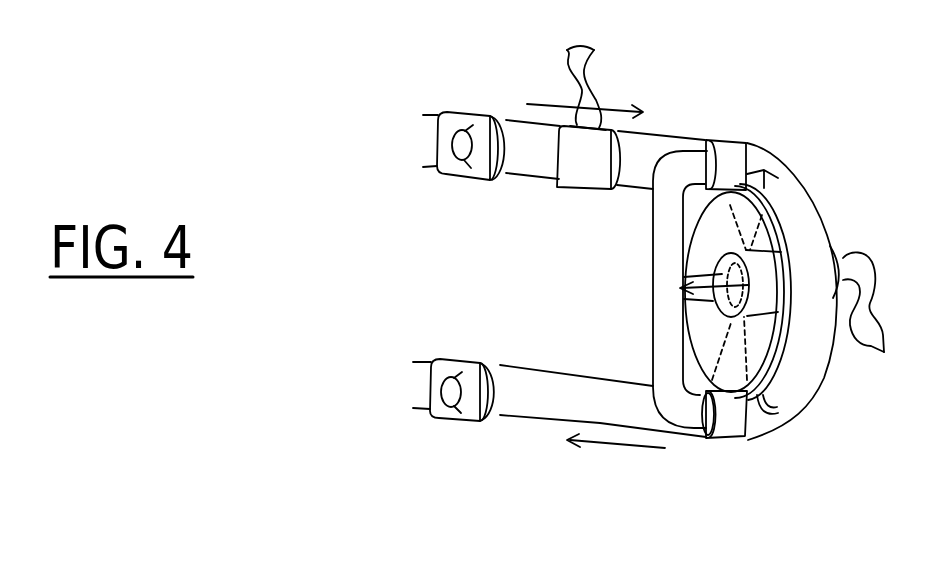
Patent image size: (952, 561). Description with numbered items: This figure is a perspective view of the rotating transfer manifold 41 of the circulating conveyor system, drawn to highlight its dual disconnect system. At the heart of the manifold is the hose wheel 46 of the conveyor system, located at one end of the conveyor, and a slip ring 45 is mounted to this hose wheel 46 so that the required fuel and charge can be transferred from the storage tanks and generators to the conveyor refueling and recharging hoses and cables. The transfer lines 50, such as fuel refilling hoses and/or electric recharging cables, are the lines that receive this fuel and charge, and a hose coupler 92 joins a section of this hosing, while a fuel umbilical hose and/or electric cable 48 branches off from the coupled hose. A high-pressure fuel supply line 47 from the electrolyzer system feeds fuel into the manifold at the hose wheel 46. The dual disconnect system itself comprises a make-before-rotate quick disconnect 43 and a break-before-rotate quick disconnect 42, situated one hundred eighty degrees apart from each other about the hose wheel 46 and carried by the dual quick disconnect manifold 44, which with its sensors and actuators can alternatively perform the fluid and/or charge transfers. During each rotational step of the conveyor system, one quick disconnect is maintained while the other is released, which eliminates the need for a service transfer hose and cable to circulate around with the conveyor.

The transfer manifold 41 is at (845, 110).
The quick disconnect 42 is at (720, 442).
The quick disconnect 43 is at (720, 140).
The dual quick disconnect manifold 44 is at (660, 332).
The slip ring 45 is at (748, 272).
The hose wheel 46 is at (760, 340).
The high-pressure fuel supply line 47 is at (871, 304).
The fuel umbilical hose and/or electric cable 48 is at (590, 73).
The transfer line 50 is at (522, 148).
The hose coupler 92 is at (588, 193).